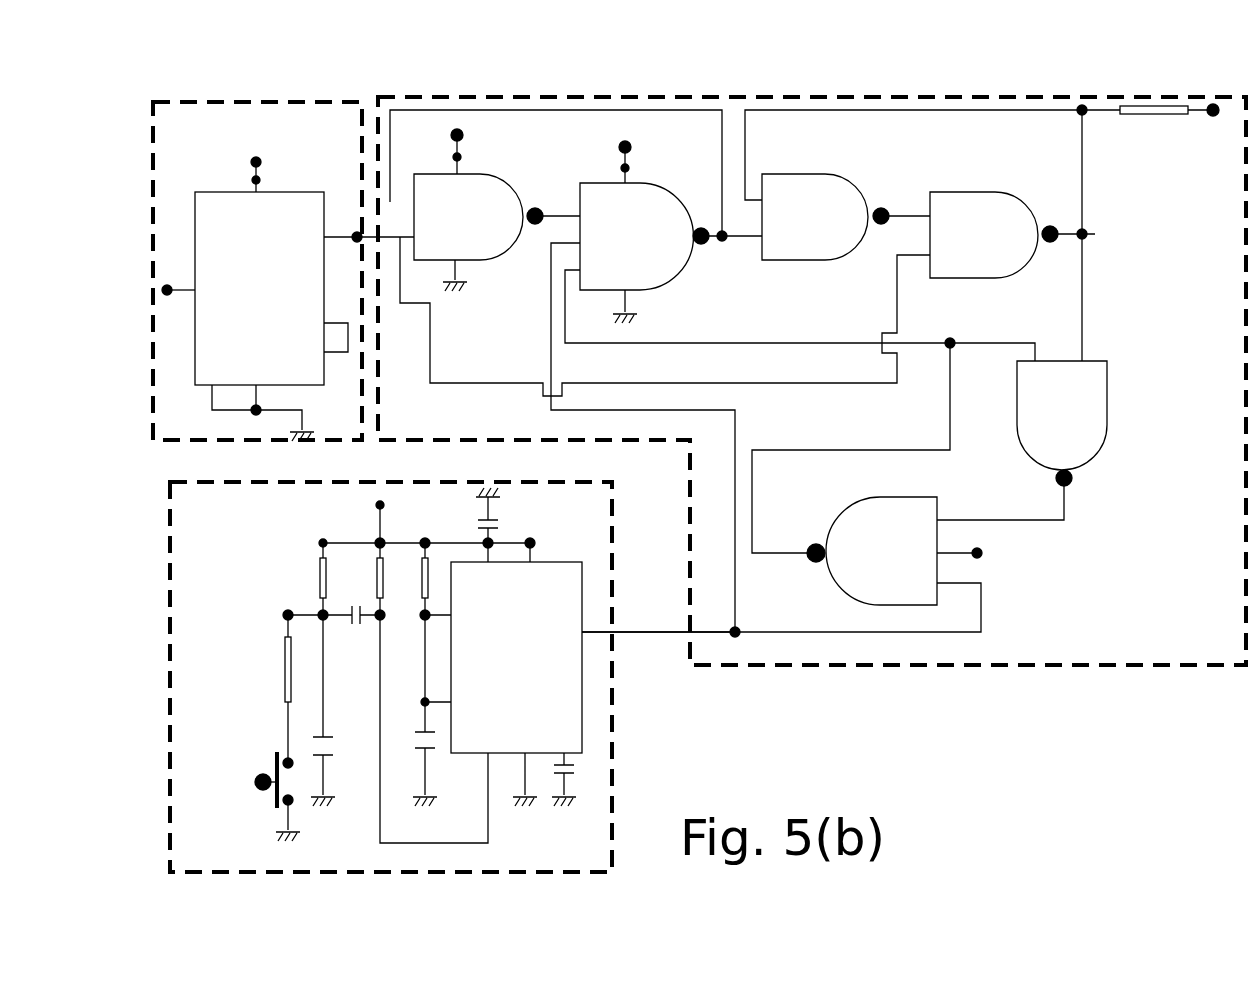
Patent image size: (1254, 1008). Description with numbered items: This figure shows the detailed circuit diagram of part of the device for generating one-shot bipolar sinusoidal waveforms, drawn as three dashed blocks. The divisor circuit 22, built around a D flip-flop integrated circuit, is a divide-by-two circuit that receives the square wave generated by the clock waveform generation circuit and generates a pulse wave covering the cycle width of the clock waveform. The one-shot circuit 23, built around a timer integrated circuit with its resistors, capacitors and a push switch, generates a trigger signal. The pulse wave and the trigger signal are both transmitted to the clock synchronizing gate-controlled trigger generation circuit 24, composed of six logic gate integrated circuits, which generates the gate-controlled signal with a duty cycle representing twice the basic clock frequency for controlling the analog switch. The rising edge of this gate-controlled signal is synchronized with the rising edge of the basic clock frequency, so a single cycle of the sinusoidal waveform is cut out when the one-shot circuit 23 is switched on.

The divisor circuit 22 is at (293, 123).
The one-shot circuit 23 is at (590, 706).
The clock synchronizing gate-controlled trigger generation circuit 24 is at (1175, 595).